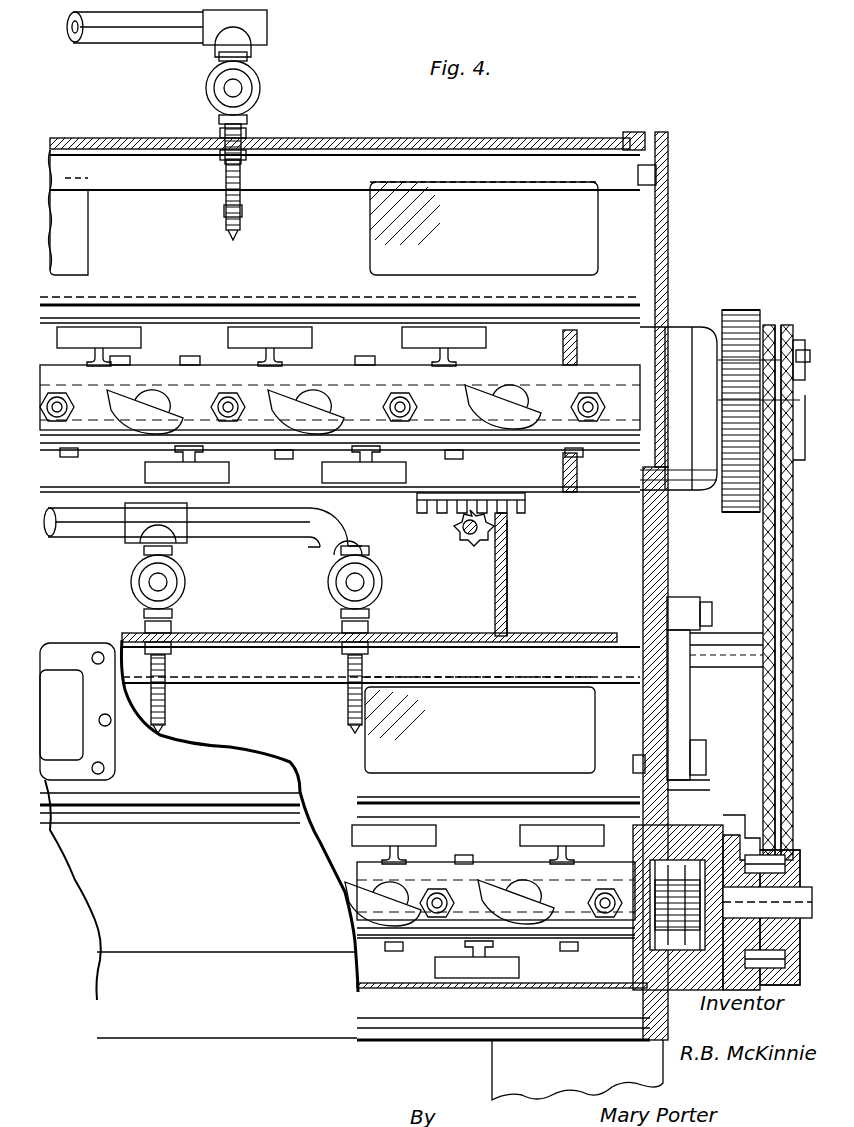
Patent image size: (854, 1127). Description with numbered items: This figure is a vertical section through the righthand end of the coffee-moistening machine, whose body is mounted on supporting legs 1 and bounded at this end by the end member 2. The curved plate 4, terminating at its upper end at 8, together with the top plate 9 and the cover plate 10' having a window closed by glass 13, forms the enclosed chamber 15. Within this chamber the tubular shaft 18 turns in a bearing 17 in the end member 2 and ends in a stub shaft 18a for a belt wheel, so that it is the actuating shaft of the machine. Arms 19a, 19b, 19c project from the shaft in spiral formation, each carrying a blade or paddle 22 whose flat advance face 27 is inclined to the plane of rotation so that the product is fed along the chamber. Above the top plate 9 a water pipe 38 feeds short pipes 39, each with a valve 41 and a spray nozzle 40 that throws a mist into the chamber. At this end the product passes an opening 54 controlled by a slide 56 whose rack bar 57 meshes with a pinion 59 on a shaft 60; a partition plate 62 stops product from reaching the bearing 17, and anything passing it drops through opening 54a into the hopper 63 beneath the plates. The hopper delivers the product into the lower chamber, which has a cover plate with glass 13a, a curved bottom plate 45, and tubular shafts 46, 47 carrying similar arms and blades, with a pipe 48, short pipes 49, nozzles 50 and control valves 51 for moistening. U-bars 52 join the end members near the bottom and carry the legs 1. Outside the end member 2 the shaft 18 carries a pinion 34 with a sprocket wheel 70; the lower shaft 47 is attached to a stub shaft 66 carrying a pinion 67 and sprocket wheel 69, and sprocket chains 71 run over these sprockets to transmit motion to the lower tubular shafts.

The supporting legs 1 is at (577, 1070).
The end member 2 is at (672, 147).
The plate 4 is at (268, 490).
The upper end of plate 8 is at (310, 320).
The top plate 9 is at (432, 140).
The cover plate 10' is at (300, 221).
The glass 13 is at (90, 222).
The glass 13a is at (480, 725).
The enclosed chamber 15 is at (197, 268).
The bearing 17 is at (655, 372).
The tubular shaft 18 is at (484, 286).
The stub shaft 18a is at (815, 392).
The arm 19a is at (340, 403).
The arm 19b is at (178, 376).
The arm 19c is at (140, 460).
The blade or paddle 22 is at (408, 825).
The flat radial face 27 is at (140, 395).
The pinion 34 is at (735, 310).
The pipe 38 is at (112, 35).
The short pipe 39 is at (248, 130).
The nozzle 40 is at (225, 235).
The valve 41 is at (205, 88).
The curved bottom plate 45 is at (585, 988).
The tubular shaft 46 is at (455, 858).
The tubular shaft 47 is at (449, 897).
The pipe 48 is at (250, 525).
The short pipe 49 is at (186, 584).
The nozzle 50 is at (170, 718).
The control valve 51 is at (130, 582).
The U-bar 52 is at (252, 839).
The opening 54 is at (560, 494).
The opening 54a is at (615, 490).
The slide 56 is at (470, 493).
The rack bar 57 is at (425, 510).
The pinion 59 is at (480, 548).
The shaft 60 is at (458, 540).
The partition plate 62 is at (578, 342).
The hopper 63 is at (508, 565).
The stub shaft 66 is at (767, 902).
The pinion 67 is at (728, 803).
The sprocket wheel 69 is at (765, 815).
The sprocket wheel 70 is at (770, 325).
The sprocket chain 71 is at (765, 572).